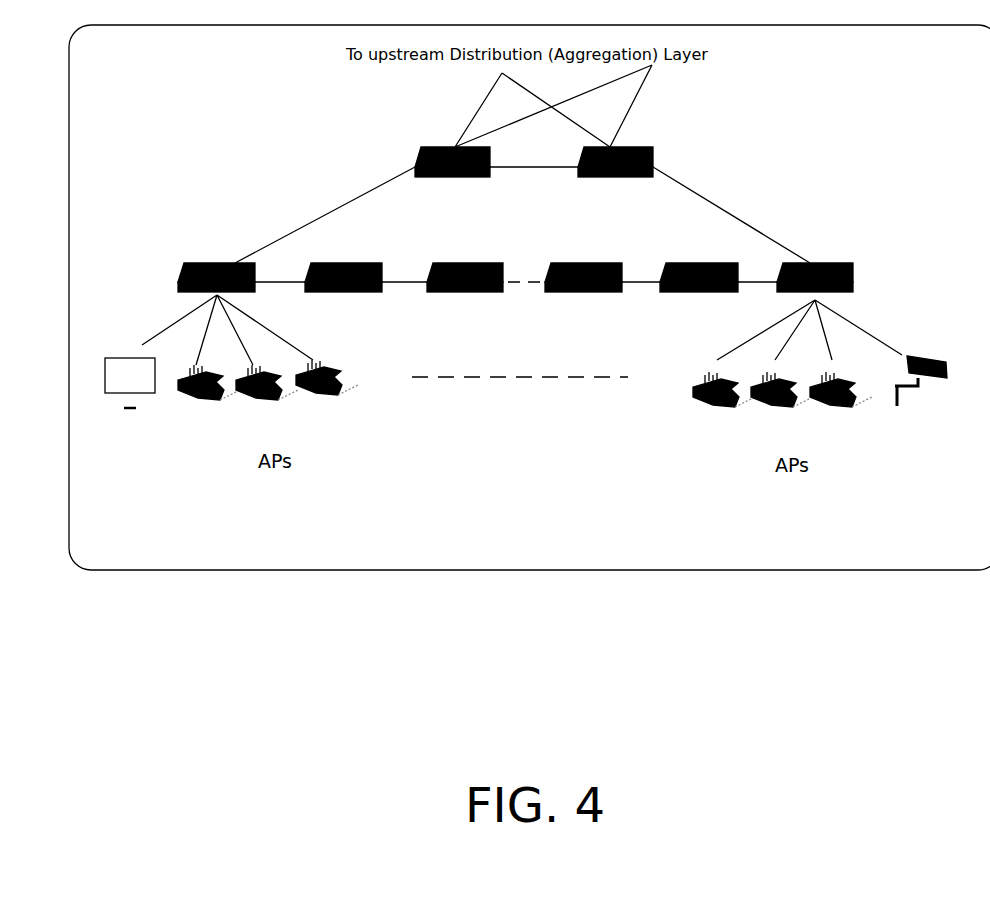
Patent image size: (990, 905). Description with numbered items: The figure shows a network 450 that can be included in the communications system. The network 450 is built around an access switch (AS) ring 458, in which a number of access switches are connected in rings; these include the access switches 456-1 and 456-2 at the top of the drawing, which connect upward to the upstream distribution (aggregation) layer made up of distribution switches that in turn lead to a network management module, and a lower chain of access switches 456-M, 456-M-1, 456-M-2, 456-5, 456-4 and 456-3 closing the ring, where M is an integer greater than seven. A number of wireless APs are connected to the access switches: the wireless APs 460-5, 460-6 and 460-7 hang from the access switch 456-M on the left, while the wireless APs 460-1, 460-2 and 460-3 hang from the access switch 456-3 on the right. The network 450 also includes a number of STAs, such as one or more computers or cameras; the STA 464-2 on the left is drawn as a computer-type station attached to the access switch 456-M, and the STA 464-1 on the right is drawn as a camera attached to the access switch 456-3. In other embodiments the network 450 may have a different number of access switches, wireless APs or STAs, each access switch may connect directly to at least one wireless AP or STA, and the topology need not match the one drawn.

The network 450 is at (529, 297).
The access switch (AS) ring 458 is at (522, 224).
The access switch 456-1 is at (419, 148).
The access switch 456-2 is at (650, 152).
The access switch 456-3 is at (848, 272).
The access switch 456-4 is at (691, 262).
The access switch 456-5 is at (581, 260).
The access switch 456-M is at (181, 261).
The access switch 456-M-1 is at (361, 261).
The access switch 456-M-2 is at (471, 261).
The wireless AP 460-1 is at (724, 408).
The wireless AP 460-2 is at (784, 408).
The wireless AP 460-3 is at (846, 408).
The wireless AP 460-5 is at (209, 400).
The wireless AP 460-6 is at (269, 400).
The access point 460-7 is at (329, 396).
The STA 464-1 is at (928, 384).
The STA 464-2 is at (127, 418).